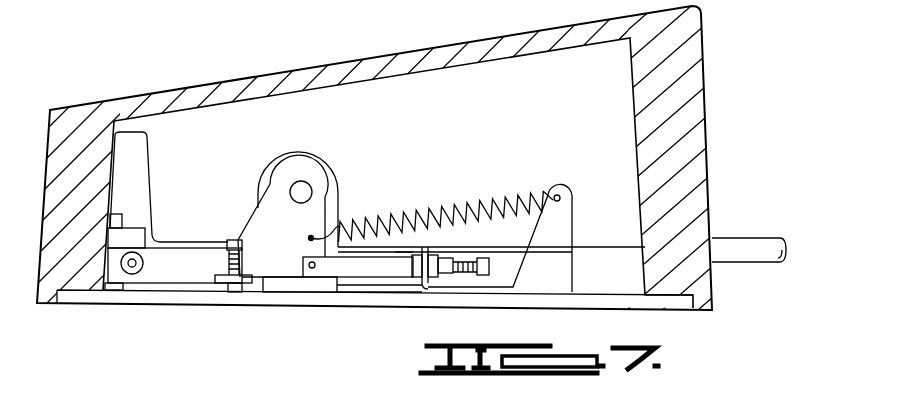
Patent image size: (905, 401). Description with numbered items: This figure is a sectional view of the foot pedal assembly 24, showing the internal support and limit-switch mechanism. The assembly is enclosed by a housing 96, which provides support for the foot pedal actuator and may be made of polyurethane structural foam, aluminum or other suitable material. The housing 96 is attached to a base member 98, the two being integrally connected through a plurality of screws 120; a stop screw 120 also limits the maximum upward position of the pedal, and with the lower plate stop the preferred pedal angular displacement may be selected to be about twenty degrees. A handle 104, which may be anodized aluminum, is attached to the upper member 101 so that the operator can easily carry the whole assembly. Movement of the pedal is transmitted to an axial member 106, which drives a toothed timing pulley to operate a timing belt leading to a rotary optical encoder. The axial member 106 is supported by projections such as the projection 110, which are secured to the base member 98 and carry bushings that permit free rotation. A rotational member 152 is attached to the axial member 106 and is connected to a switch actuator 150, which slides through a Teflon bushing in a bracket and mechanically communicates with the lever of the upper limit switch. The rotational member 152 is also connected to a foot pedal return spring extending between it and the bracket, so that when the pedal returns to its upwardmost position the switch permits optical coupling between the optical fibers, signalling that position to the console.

The shutter actuating assembly 24 is at (381, 200).
The housing 96 is at (73, 147).
The base member 98 is at (177, 297).
The upper member 101 is at (683, 58).
The handle 104 is at (743, 245).
The axial member 106 is at (304, 188).
The projection 110 is at (308, 153).
The stop screw 120 is at (235, 240).
The switch actuator 150 is at (365, 268).
The rotational member 152 is at (283, 260).